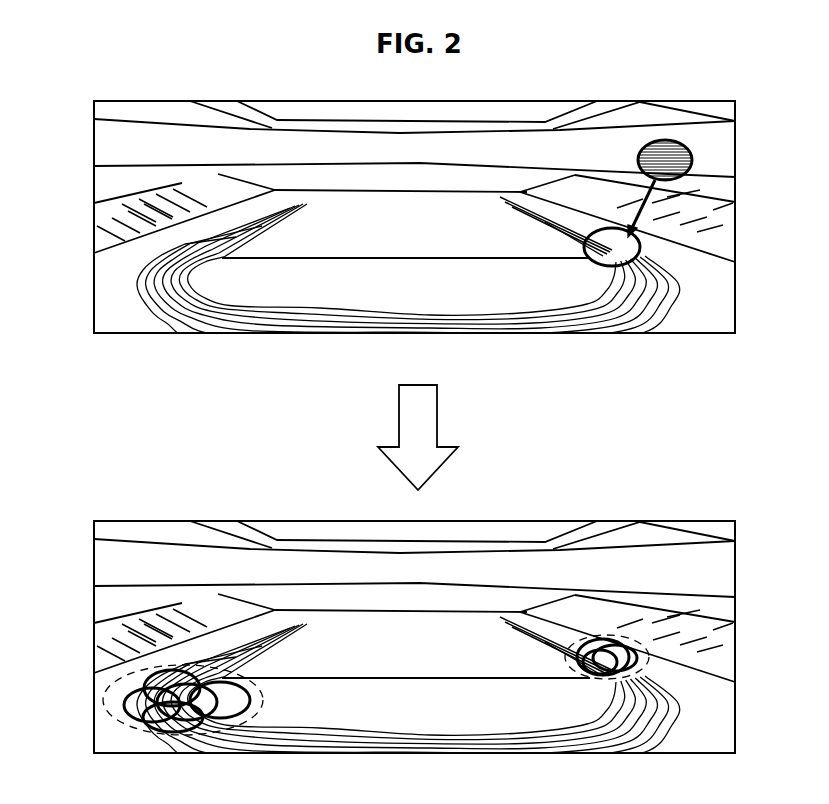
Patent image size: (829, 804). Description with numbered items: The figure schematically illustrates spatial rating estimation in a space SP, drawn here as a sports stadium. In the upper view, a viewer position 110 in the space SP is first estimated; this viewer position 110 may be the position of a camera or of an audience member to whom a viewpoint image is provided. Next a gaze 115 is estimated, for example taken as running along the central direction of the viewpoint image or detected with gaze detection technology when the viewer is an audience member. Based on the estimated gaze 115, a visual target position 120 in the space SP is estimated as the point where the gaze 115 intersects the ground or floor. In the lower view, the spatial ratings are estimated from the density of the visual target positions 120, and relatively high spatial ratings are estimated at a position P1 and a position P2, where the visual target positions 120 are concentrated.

The space SP is at (413, 212).
The viewer position 110 is at (692, 160).
The gaze 115 is at (712, 221).
The visual target position 120 is at (645, 250).
The position P1 is at (576, 670).
The position P2 is at (110, 702).